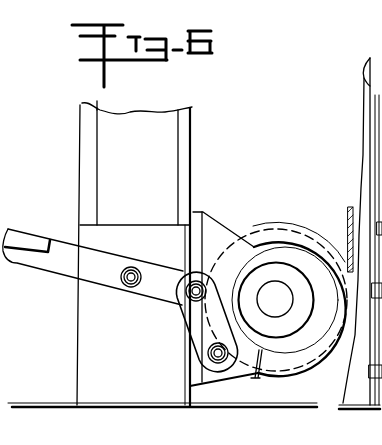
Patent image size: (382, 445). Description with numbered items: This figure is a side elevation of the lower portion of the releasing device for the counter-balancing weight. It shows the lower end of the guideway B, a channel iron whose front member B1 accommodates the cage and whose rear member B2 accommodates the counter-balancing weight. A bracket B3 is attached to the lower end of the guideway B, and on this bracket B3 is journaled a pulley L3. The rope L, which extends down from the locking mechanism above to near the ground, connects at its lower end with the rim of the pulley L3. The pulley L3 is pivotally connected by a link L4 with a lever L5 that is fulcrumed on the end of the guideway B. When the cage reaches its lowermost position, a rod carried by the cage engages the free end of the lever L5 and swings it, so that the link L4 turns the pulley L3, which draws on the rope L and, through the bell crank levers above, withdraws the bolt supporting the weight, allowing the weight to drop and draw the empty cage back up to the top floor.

The guideway B is at (364, 143).
The front member of the guideway B1 is at (135, 118).
The rear member of the guideway B2 is at (88, 160).
The bracket B3 is at (215, 238).
The rope L is at (348, 214).
The pulley L3 is at (292, 239).
The link L4 is at (210, 333).
The lever L5 is at (60, 273).